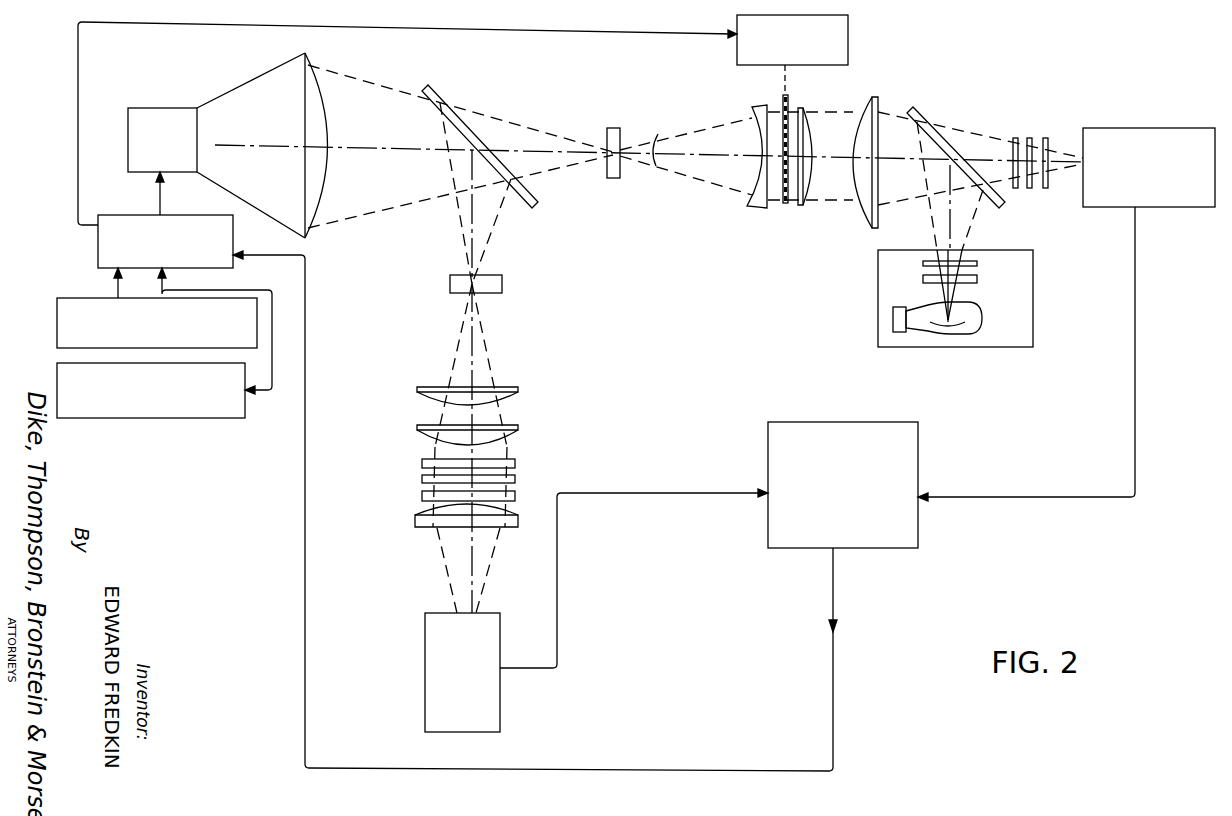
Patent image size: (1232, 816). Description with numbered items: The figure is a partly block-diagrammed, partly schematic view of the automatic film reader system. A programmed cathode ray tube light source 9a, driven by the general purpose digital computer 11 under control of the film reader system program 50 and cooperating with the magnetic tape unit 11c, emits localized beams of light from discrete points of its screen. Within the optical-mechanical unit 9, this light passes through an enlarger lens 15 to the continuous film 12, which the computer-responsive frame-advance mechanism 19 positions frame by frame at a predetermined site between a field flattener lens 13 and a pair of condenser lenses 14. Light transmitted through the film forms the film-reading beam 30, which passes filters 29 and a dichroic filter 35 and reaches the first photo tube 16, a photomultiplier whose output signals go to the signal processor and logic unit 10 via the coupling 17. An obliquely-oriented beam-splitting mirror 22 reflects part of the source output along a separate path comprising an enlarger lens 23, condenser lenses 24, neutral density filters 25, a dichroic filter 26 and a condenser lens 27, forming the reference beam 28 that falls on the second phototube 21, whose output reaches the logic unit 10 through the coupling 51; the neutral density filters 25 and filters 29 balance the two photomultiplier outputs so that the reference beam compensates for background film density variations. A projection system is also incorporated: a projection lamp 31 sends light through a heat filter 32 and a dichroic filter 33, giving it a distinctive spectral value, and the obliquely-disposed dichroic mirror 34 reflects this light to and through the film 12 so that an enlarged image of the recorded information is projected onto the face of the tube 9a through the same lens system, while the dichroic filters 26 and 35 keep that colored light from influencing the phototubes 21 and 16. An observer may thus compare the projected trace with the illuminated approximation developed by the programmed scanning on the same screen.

The optical-mechanical unit 9 is at (916, 78).
The cathode ray tube light source 9a is at (222, 90).
The signal processor and logic unit 10 is at (920, 458).
The digital computer 11 is at (98, 243).
The magnetic tape unit 11c is at (185, 418).
The film 12 is at (788, 205).
The field flattener lens 13 is at (752, 207).
The condenser lenses 14 is at (813, 190).
The enlarger lens 15 is at (614, 135).
The first photo tube 16 is at (1133, 128).
The coupling 17 is at (1133, 378).
The frame-advance mechanism 19 is at (737, 50).
The second phototube 21 is at (500, 700).
The beam-splitting mirror 22 is at (459, 120).
The enlarger lens 23 is at (496, 283).
The condenser lenses 24 is at (508, 428).
The neutral density filters 25 is at (517, 471).
The dichroic filter 26 is at (422, 494).
The condenser lens 27 is at (426, 524).
The reference beam 28 is at (453, 448).
The filters 29 is at (1031, 138).
The film-reading beam 30 is at (655, 142).
The projection lamp 31 is at (965, 335).
The heat filter 32 is at (978, 282).
The dichroic filter 33 is at (975, 262).
The dichroic mirror 34 is at (918, 118).
The dichroic filter 35 is at (1047, 137).
The film reader system program 50 is at (57, 318).
The coupling 51 is at (680, 496).